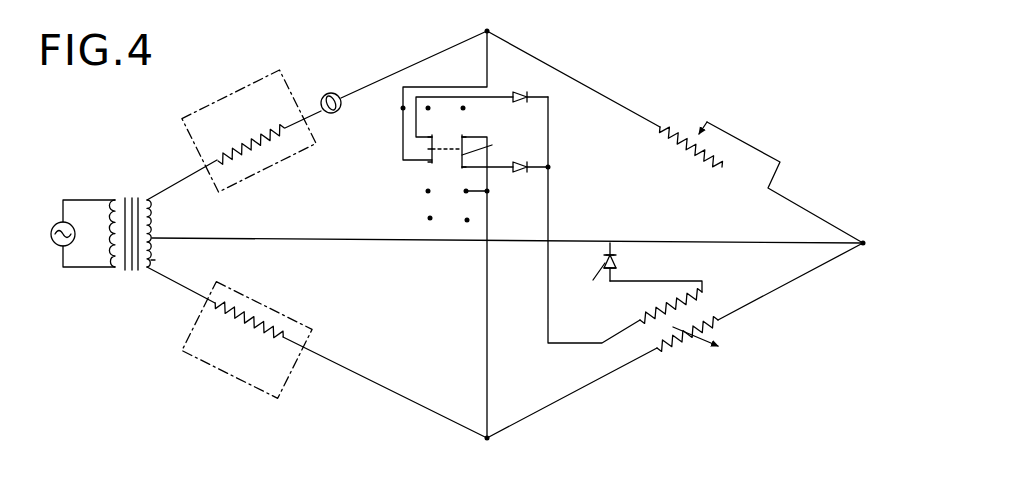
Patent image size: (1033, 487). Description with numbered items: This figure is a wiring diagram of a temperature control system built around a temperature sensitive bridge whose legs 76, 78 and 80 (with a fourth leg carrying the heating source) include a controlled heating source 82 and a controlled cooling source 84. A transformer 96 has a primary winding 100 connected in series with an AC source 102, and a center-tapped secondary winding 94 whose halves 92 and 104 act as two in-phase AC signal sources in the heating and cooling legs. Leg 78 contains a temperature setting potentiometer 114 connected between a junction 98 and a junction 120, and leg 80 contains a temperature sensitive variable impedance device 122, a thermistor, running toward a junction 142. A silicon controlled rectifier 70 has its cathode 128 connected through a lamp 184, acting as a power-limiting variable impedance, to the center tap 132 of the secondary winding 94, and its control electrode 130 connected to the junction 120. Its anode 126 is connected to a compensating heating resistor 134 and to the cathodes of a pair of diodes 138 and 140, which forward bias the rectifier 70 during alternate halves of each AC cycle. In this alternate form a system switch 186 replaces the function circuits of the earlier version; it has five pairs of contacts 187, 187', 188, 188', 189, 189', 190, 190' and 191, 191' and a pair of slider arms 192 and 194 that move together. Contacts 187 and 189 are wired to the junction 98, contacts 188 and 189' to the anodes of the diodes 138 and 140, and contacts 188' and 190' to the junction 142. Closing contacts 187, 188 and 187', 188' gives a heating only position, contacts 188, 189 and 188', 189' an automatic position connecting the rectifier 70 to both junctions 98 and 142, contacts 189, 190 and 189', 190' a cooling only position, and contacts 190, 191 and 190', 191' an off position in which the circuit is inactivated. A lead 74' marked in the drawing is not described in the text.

The controlled rectifier 70 is at (634, 262).
The lead to lamp 74' is at (386, 79).
The leg of the bridge circuit 76 is at (385, 352).
The leg of the bridge circuit 78 is at (788, 194).
The leg of the bridge circuit 80 is at (800, 285).
The controlled heating source 82 is at (253, 173).
The controlled cooling source 84 is at (278, 303).
The half of the secondary winding 92 is at (155, 213).
The center-tapped secondary winding 94 is at (136, 273).
The transformer 96 is at (131, 196).
The junction 98 is at (488, 31).
The primary winding 100 is at (115, 200).
The AC source 102 is at (58, 250).
The half of the secondary winding 104 is at (154, 261).
The temperature setting potentiometer 114 is at (680, 125).
The junction 120 is at (863, 243).
The temperature sensitive variable impedance device 122 is at (718, 322).
The anode 126 is at (586, 284).
The cathode 128 is at (606, 253).
The control electrode 130 is at (612, 241).
The center tap 132 is at (154, 240).
The heating resistor 134 is at (693, 297).
The diode 138 is at (532, 88).
The diode 140 is at (528, 160).
The junction 142 is at (487, 438).
The lamp 184 is at (333, 93).
The system switch 186 is at (484, 111).
The contact 187 is at (438, 86).
The contact 187' is at (471, 78).
The contact 188 is at (394, 135).
The contact 188' is at (496, 124).
The contact 189 is at (397, 173).
The contact 189' is at (499, 180).
The contact 190 is at (399, 200).
The contact 190' is at (500, 207).
The contact 191 is at (400, 226).
The contact 191' is at (466, 246).
The slider arm 192 is at (430, 149).
The slider arm 194 is at (492, 145).